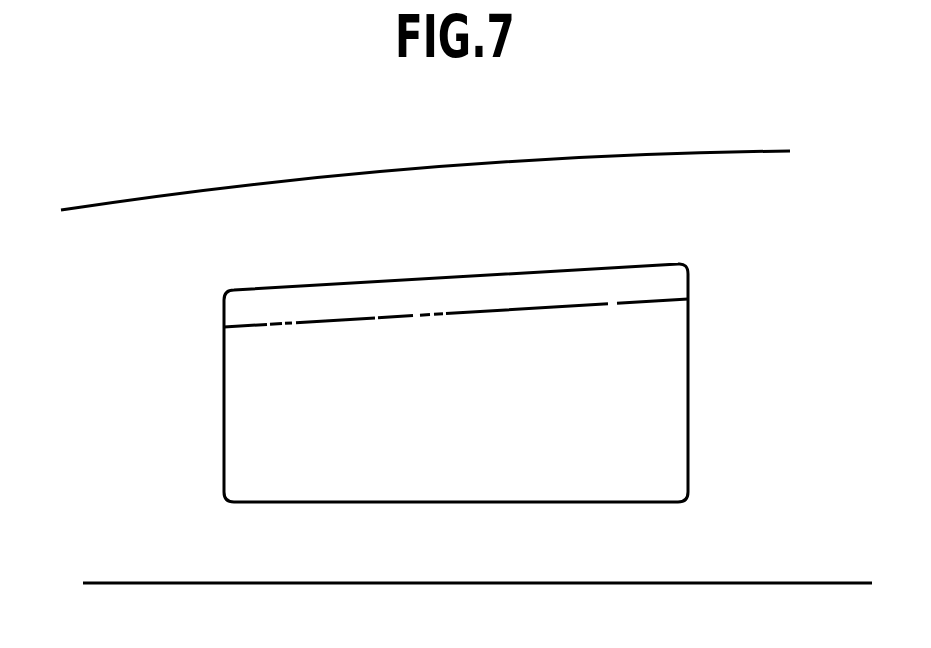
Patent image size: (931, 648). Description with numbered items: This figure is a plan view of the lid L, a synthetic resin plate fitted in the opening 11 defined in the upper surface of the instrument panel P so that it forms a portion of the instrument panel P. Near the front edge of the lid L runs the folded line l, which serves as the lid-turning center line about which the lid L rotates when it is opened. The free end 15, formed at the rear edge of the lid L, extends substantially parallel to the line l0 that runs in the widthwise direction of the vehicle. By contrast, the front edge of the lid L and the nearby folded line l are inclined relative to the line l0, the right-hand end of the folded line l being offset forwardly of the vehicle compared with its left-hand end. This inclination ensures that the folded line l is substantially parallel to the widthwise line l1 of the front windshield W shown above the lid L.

The front windshield W is at (425, 160).
The widthwise line of front windshield l1 is at (372, 170).
The instrument panel P is at (481, 399).
The lid L is at (456, 413).
The folded line l is at (376, 316).
The free end 15 is at (400, 503).
The opening 11 is at (456, 413).
The widthwise line of vehicle l0 is at (460, 584).